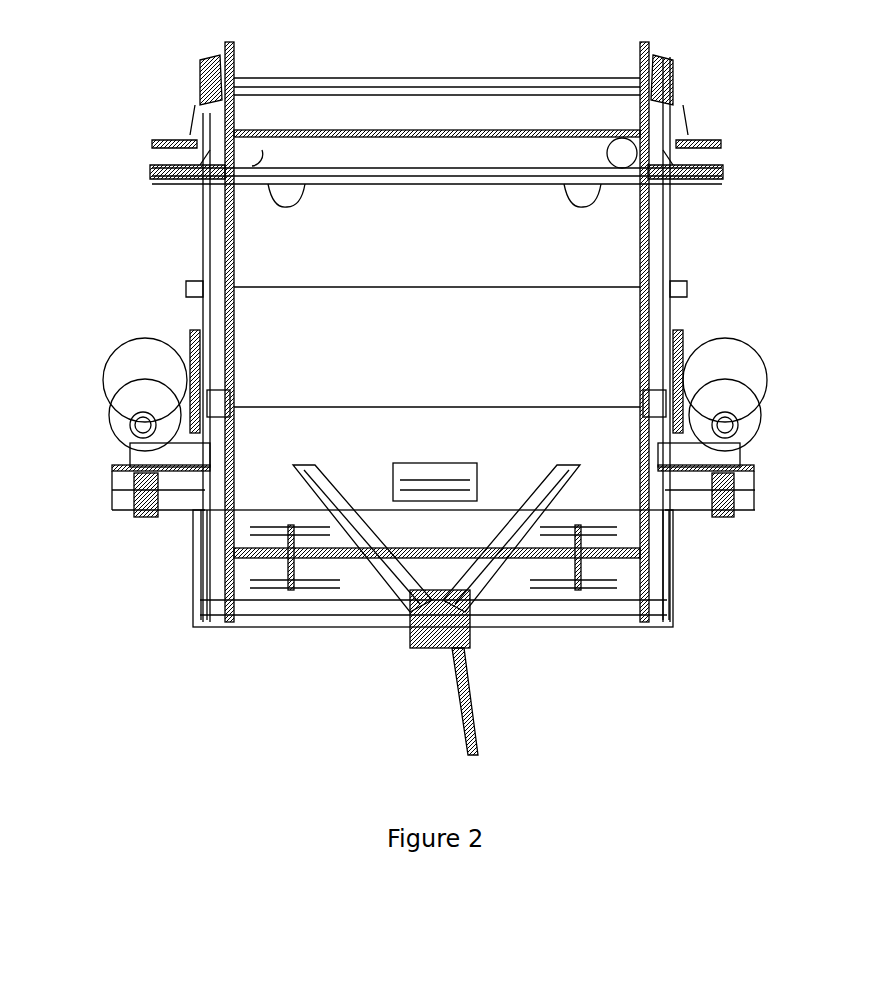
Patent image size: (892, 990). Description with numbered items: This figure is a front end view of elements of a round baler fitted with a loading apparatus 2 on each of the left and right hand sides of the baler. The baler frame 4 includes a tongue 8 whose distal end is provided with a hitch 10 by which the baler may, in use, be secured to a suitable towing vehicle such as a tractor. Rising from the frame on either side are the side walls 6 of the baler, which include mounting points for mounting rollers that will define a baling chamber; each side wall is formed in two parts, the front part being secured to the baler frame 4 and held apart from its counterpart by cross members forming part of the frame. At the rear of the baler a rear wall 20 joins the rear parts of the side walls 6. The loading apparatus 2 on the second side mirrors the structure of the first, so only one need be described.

The loading apparatus 2 is at (95, 506).
The baler frame 4 is at (684, 633).
The side walls 6 is at (183, 213).
The tongue 8 is at (497, 585).
The hitch 10 is at (410, 652).
The rear wall 20 is at (416, 250).